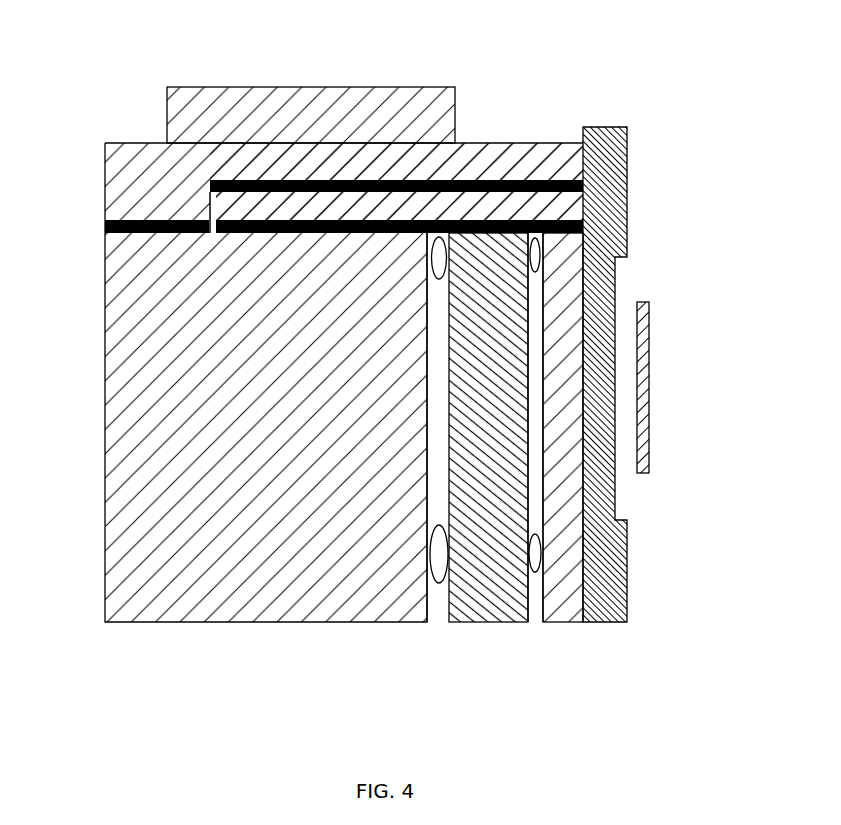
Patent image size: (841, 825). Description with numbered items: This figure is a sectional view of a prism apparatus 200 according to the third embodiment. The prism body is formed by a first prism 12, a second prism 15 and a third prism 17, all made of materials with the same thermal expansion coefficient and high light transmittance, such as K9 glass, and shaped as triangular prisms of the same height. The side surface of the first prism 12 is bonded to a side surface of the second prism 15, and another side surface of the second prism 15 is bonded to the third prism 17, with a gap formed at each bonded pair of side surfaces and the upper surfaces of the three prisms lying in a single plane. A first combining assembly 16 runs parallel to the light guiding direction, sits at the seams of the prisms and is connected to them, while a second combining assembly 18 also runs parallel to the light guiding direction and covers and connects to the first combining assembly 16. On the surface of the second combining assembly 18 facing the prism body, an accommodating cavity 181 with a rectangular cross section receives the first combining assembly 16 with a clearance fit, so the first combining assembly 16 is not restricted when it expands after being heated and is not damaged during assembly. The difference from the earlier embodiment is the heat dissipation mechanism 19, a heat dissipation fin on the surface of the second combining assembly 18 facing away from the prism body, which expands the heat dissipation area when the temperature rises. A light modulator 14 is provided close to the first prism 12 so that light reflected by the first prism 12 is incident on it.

The prism apparatus 200 is at (337, 87).
The heat dissipation mechanism 19 is at (210, 117).
The second combining assembly 18 is at (147, 182).
The accommodating cavity 181 is at (497, 170).
The first combining assembly 16 is at (530, 218).
The third prism 17 is at (335, 623).
The second prism 15 is at (482, 623).
The first prism 12 is at (563, 622).
The light modulator 14 is at (643, 333).